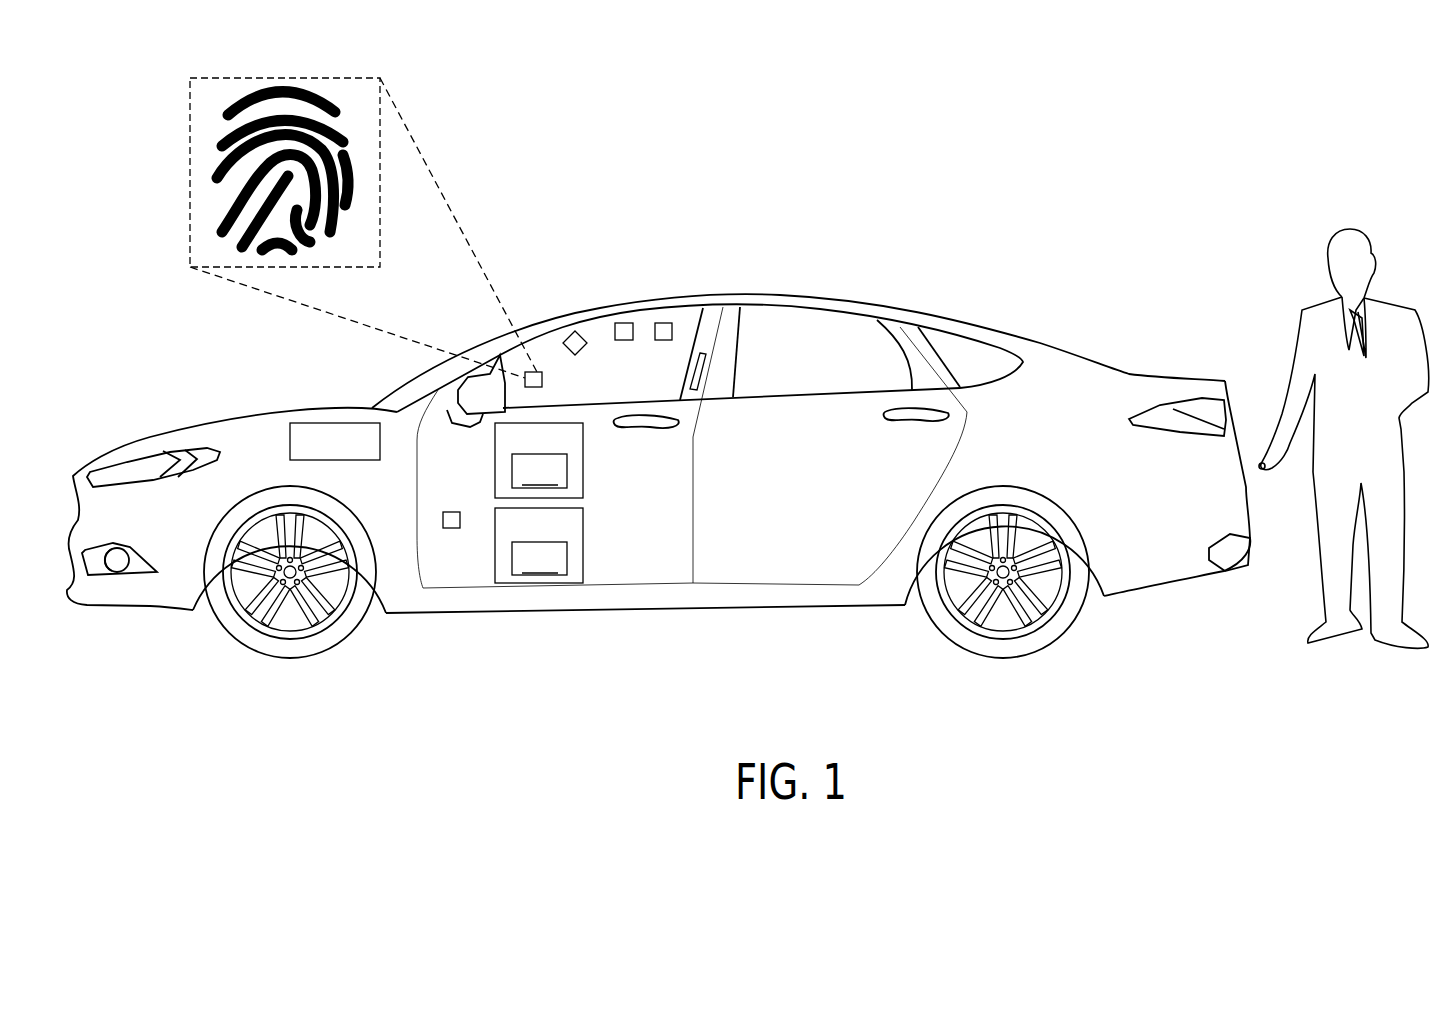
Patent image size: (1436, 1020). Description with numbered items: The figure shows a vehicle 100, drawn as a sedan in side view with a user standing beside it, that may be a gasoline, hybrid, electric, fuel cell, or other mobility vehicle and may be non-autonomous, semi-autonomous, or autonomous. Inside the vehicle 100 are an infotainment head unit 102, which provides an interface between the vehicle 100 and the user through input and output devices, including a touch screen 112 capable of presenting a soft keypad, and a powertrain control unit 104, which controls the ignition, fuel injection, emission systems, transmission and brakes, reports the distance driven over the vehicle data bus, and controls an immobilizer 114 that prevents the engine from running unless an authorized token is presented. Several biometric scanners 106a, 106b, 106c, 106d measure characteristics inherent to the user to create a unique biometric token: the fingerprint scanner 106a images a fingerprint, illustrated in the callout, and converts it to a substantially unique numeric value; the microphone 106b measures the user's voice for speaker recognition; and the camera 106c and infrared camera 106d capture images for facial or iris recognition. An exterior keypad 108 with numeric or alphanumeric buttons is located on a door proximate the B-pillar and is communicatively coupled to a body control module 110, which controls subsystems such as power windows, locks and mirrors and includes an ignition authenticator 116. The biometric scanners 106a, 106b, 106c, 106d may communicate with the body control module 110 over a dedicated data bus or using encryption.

The vehicle 100 is at (1149, 376).
The infotainment head unit 102 is at (583, 458).
The powertrain control unit 104 is at (337, 423).
The fingerprint scanner 106a is at (542, 380).
The microphone 106b is at (565, 338).
The camera 106c is at (623, 323).
The infrared camera 106d is at (663, 323).
The exterior keypad 108 is at (705, 370).
The body control module 110 is at (583, 544).
The touch screen 112 is at (539, 471).
The immobilizer 114 is at (452, 512).
The ignition authenticator 116 is at (539, 559).